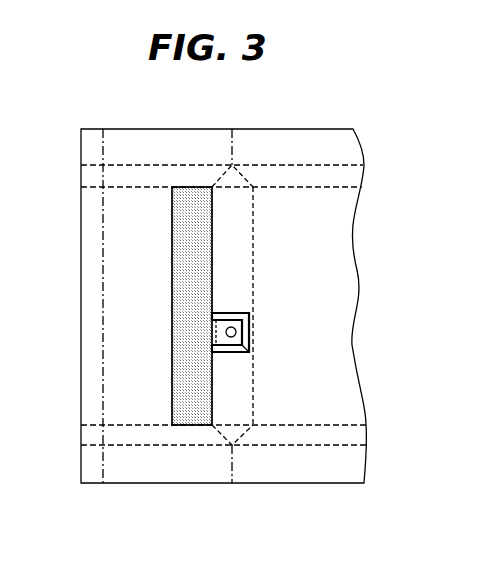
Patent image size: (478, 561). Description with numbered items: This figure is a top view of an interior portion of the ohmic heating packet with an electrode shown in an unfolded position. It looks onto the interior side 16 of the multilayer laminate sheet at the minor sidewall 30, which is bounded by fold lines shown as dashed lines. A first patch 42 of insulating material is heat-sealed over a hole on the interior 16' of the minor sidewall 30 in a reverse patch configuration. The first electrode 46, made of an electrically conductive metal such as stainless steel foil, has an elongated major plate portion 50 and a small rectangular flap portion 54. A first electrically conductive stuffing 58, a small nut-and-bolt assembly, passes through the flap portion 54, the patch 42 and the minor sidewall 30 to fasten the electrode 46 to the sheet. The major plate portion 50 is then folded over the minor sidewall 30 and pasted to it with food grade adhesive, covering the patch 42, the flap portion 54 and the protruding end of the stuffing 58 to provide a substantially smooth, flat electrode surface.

The interior side 16 is at (258, 306).
The interior 16' is at (278, 282).
The first electrode 46 is at (172, 311).
The major plate portion 50 is at (189, 331).
The first patch 42 is at (249, 340).
The first electrically conductive stuffing 58 is at (235, 328).
The flap portion 54 is at (249, 346).
The minor sidewall 30 is at (232, 408).